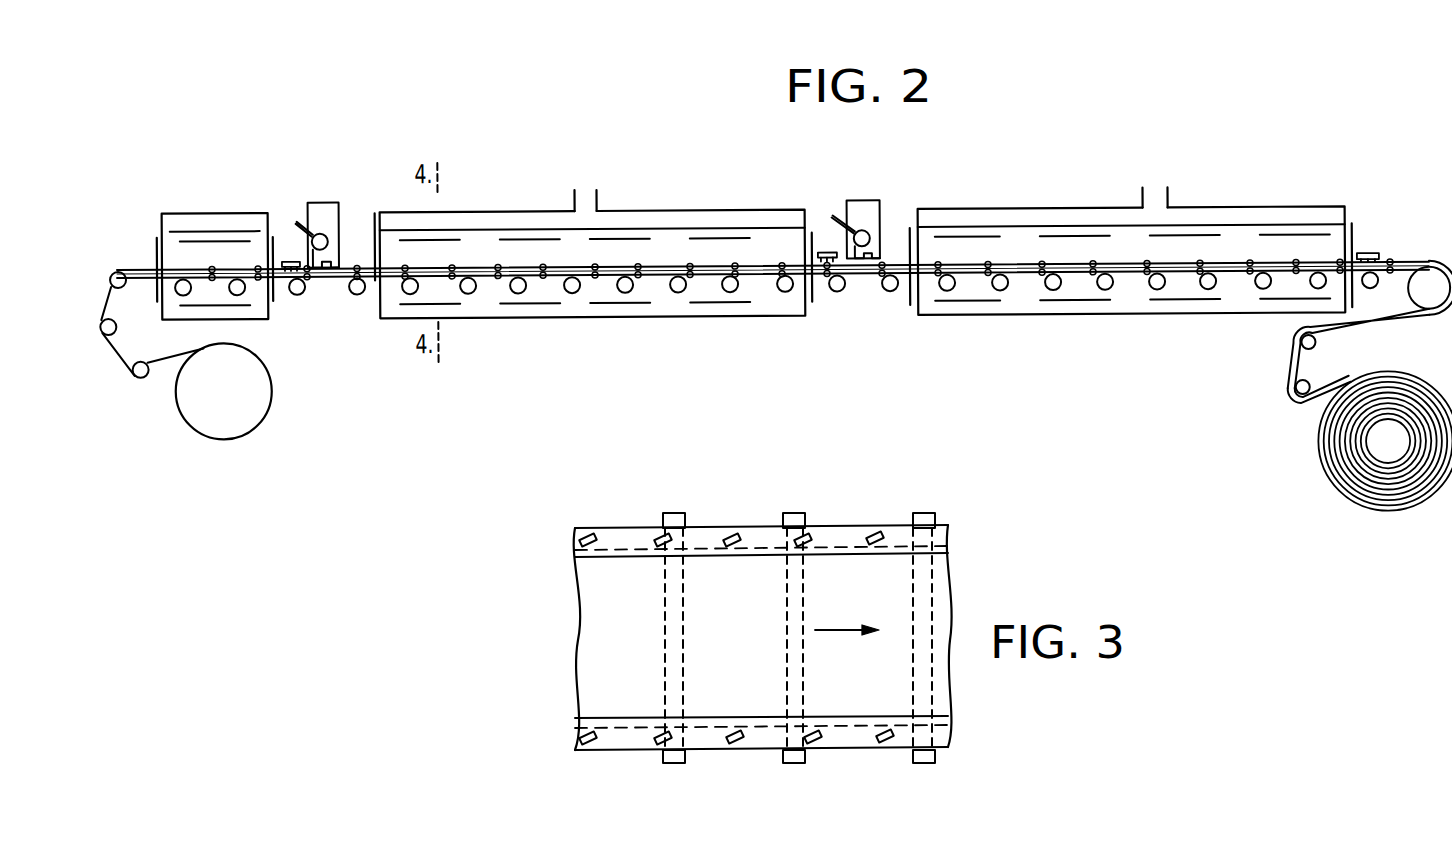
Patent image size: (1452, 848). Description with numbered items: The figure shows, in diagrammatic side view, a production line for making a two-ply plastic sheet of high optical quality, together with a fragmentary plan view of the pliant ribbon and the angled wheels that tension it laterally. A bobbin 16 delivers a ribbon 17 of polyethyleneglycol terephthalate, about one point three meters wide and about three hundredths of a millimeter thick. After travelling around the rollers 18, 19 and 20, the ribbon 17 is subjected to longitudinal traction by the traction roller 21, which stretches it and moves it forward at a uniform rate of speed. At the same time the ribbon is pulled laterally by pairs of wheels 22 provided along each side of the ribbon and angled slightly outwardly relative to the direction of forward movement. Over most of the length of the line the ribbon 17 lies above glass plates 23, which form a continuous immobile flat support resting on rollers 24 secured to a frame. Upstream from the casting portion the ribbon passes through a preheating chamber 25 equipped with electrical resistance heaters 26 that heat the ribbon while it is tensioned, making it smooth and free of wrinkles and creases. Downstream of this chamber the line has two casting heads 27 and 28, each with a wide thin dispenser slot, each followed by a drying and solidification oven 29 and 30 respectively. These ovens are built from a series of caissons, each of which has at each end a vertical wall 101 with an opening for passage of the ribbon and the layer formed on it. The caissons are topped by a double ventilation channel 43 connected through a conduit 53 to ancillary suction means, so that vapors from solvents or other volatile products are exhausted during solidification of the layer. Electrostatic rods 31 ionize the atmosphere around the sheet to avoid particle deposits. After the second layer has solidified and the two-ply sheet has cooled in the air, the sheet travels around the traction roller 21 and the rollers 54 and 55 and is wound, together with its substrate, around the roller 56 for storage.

In FIG. 2, the bobbin 16 is at (258, 403).
In FIG. 2, the ribbon 17 is at (110, 353).
In FIG. 3, the ribbon 17 is at (893, 532).
In FIG. 2, the roller 18 is at (141, 378).
In FIG. 2, the roller 19 is at (118, 327).
In FIG. 2, the roller 20 is at (118, 272).
In FIG. 2, the traction roller 21 is at (1430, 275).
In FIG. 2, the wheels 22 is at (595, 267).
In FIG. 3, the wheels 22 is at (660, 535).
In FIG. 2, the glass plates 23 is at (598, 290).
In FIG. 3, the glass plates 23 is at (833, 562).
In FIG. 2, the rollers 24 is at (355, 297).
In FIG. 3, the rollers 24 is at (685, 753).
In FIG. 2, the preheating chamber 25 is at (170, 238).
In FIG. 2, the electrical resistance heaters 26 is at (238, 238).
In FIG. 2, the casting head 27 is at (324, 212).
In FIG. 2, the casting head 28 is at (855, 194).
In FIG. 2, the drying and solidification oven 29 is at (670, 233).
In FIG. 2, the drying and solidification oven 30 is at (1238, 235).
In FIG. 2, the electrostatic rods 31 is at (287, 263).
In FIG. 2, the double ventilation channel 43 is at (730, 220).
In FIG. 2, the conduit 53 is at (588, 200).
In FIG. 2, the roller 54 is at (1290, 355).
In FIG. 2, the roller 55 is at (1288, 397).
In FIG. 2, the roller 56 is at (1373, 452).
In FIG. 2, the vertical wall 101 is at (373, 238).